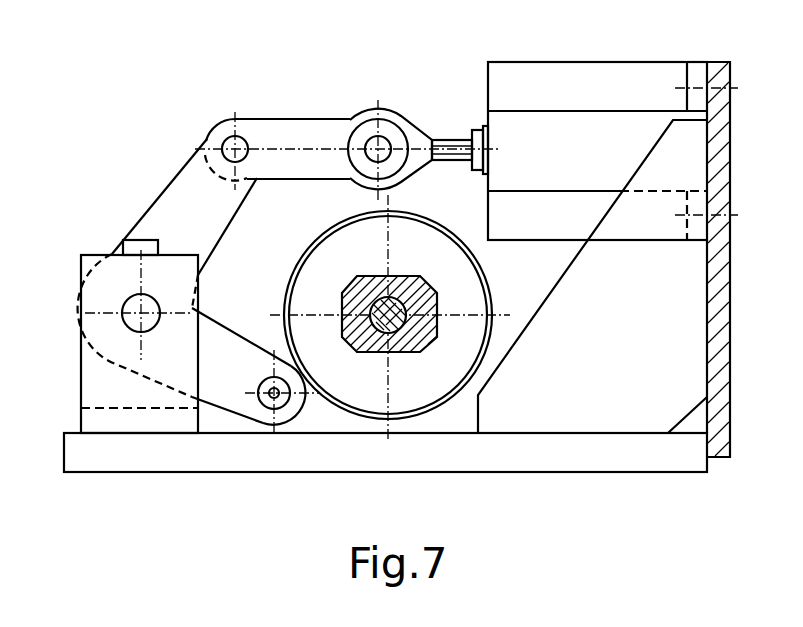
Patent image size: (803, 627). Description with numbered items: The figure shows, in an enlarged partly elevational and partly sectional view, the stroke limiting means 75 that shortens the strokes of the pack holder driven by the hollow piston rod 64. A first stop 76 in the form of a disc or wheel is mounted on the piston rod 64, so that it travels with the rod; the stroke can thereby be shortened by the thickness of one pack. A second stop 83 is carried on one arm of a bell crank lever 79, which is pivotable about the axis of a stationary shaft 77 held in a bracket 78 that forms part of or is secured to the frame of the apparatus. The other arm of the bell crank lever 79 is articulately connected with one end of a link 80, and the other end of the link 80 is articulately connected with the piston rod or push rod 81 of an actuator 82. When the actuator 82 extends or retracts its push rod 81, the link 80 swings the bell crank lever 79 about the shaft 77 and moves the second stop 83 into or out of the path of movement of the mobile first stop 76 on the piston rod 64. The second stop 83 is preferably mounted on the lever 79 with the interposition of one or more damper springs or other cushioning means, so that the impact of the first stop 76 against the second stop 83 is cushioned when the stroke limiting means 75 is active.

The stroke limiting means 75 is at (173, 150).
The first stop 76 is at (455, 395).
The stationary shaft 77 is at (128, 303).
The bracket 78 is at (98, 381).
The bell crank lever 79 is at (178, 200).
The link 80 is at (298, 133).
The push rod 81 is at (448, 147).
The actuator 82 is at (616, 77).
The second stop 83 is at (270, 400).
The piston rod 64 is at (397, 330).